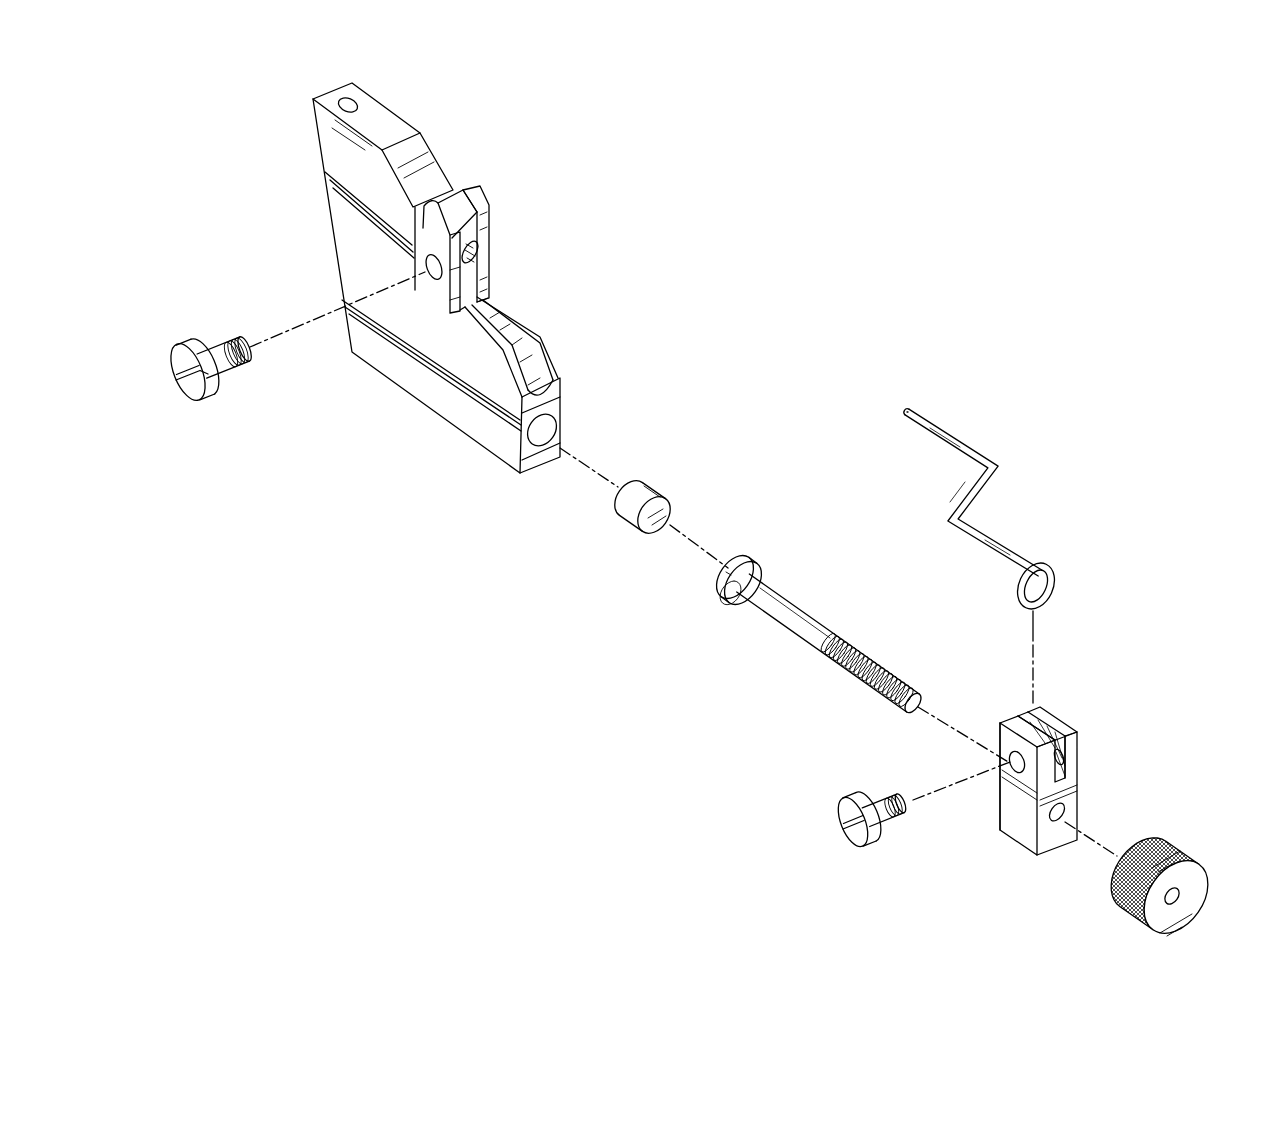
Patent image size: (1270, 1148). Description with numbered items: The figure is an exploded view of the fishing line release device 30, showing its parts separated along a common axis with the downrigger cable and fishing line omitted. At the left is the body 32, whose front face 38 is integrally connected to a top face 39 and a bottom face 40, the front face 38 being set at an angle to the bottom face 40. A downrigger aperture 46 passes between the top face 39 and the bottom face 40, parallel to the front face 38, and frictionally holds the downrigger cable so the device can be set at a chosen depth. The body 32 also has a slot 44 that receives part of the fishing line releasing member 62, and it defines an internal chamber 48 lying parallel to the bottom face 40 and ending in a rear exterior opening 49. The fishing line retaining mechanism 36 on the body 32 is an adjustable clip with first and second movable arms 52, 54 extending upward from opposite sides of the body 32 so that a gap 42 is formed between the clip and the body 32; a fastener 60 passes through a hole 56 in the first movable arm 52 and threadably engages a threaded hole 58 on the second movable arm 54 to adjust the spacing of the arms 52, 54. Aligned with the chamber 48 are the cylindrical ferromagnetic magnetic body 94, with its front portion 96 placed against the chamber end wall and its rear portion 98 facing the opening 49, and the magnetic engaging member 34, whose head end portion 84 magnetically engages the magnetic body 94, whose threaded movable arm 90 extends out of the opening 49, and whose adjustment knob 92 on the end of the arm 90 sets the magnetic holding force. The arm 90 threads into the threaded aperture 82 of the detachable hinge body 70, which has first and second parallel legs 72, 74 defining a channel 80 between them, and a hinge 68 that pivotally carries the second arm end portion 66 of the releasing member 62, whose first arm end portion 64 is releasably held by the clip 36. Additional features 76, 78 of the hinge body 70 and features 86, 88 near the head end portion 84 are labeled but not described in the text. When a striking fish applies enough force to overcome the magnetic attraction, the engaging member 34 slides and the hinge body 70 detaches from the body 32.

The fishing line release device 30 is at (1082, 152).
The body 32 is at (548, 125).
The magnetic engaging member 34 is at (676, 694).
The fishing line retaining mechanism 36 is at (938, 309).
The front face 38 is at (334, 246).
The top face 39 is at (410, 122).
The bottom face 40 is at (411, 394).
The gap 42 is at (426, 277).
The slot 44 is at (513, 325).
The downrigger aperture 46 is at (353, 105).
The chamber 48 is at (548, 448).
The second end portion 49 is at (556, 418).
The first movable arm 52 is at (421, 214).
The second movable arm 54 is at (481, 205).
The hole 56 is at (462, 262).
The threaded hole 58 is at (504, 247).
The fastener 60 is at (224, 378).
The fishing line releasing member 62 is at (996, 466).
The first arm end portion 64 is at (907, 410).
The second arm end portion 66 is at (1053, 600).
The hinge 68 is at (912, 833).
The detachable hinge body 70 is at (1010, 838).
The first leg 72 is at (1003, 720).
The second leg 74 is at (1036, 706).
The bore 76 is at (1016, 760).
The slot wall 78 is at (1063, 755).
The channel 80 is at (1061, 765).
The threaded aperture 82 is at (1057, 823).
The head end portion 84 is at (727, 601).
The washer face 86 is at (733, 554).
The bolt head 88 is at (771, 575).
The movable arm 90 is at (808, 637).
The adjustment knob 92 is at (1184, 856).
The magnetic body 94 is at (618, 518).
The front portion 96 is at (625, 468).
The rear portion 98 is at (657, 533).